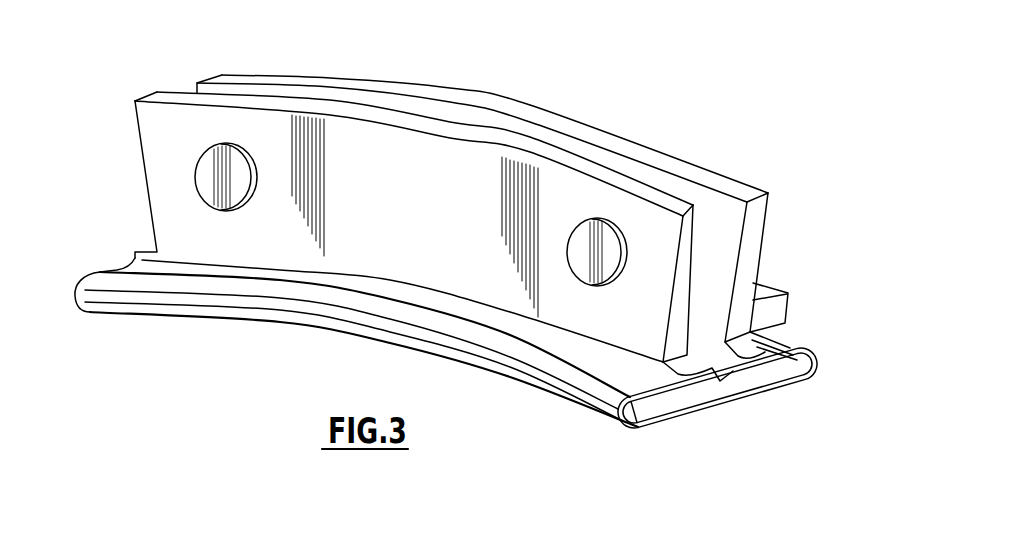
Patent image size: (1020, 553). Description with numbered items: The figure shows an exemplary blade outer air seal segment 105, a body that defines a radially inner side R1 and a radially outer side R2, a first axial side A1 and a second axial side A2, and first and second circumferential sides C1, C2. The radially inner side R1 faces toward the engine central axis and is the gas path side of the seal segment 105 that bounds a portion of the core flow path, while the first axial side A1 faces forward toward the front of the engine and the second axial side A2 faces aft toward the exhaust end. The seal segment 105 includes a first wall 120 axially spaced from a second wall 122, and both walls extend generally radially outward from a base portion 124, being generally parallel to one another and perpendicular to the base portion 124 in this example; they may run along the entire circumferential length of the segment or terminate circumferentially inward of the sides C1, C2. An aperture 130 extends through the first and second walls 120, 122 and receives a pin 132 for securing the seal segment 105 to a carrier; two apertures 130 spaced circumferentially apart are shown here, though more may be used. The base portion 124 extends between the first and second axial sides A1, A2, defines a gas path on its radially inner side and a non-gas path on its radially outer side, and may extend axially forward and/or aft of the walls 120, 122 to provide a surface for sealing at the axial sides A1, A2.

The BOAS segment 105 is at (831, 150).
The first wall 120 is at (547, 150).
The second wall 122 is at (637, 148).
The base portion 124 is at (672, 405).
The aperture 130 is at (257, 178).
The pin 132 is at (234, 178).
The first axial side A1 is at (552, 388).
The second axial side A2 is at (817, 350).
The first circumferential side C1 is at (80, 306).
The second circumferential side C2 is at (657, 412).
The radially inner side R1 is at (741, 397).
The radially outer side R2 is at (721, 370).